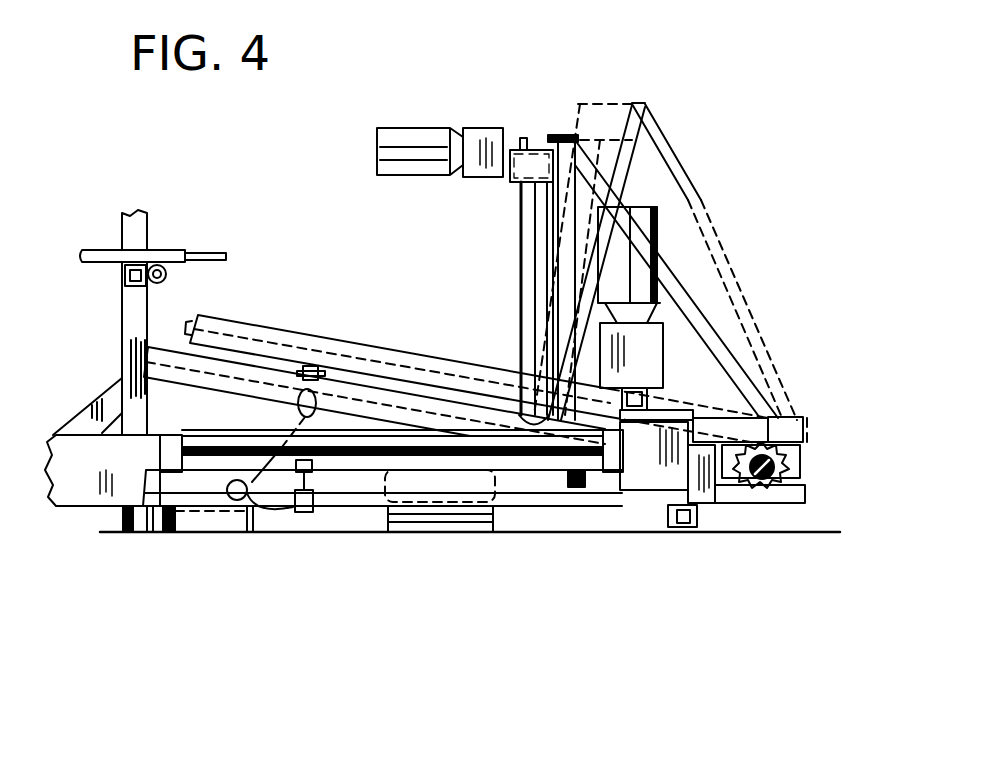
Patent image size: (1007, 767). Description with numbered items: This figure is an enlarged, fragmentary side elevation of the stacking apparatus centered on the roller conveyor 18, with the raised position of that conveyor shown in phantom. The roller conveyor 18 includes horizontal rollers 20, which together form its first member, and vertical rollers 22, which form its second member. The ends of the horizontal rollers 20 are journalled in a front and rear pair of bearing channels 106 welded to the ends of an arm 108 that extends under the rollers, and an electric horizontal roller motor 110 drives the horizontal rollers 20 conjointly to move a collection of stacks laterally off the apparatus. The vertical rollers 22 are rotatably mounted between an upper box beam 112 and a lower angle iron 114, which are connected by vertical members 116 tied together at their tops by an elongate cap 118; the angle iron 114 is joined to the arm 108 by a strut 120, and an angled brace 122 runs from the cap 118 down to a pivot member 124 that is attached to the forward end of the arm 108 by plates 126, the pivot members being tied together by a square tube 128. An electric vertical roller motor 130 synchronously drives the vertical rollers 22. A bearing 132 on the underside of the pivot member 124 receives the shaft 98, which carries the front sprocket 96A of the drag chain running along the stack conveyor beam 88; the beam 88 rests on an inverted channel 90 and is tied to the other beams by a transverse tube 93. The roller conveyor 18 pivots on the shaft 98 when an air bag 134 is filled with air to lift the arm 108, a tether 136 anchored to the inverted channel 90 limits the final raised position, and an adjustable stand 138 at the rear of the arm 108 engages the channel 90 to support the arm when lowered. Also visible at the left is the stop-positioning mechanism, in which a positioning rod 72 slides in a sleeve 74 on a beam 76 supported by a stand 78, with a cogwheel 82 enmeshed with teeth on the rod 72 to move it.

The roller conveyor 18 is at (472, 306).
The horizontal rollers 20 is at (390, 350).
The vertical rollers 22 is at (650, 152).
The positioning rod 72 is at (213, 252).
The sleeve 74 is at (158, 246).
The beam 76 is at (125, 275).
The stand 78 is at (133, 332).
The cogwheel 82 is at (166, 282).
The beam 88 is at (77, 493).
The inverted channel 90 is at (153, 523).
The tube 93 is at (675, 523).
The front sprocket 96A is at (788, 495).
The shaft 98 is at (785, 458).
The bearing channels 106 is at (160, 445).
The arm 108 is at (365, 487).
The horizontal roller motor 110 is at (663, 220).
The upper box beam 112 is at (530, 150).
The lower angle iron 114 is at (520, 416).
The vertical members 116 is at (530, 265).
The elongate cap 118 is at (557, 137).
The strut 120 is at (558, 462).
The angled brace 122 is at (703, 323).
The pivot member 124 is at (840, 385).
The plate 126 is at (636, 487).
The square tube 128 is at (640, 408).
The vertical roller motor 130 is at (436, 97).
The bearing 132 is at (763, 489).
The air bag 134 is at (453, 535).
The tether 136 is at (285, 428).
The adjustable stand 138 is at (168, 512).